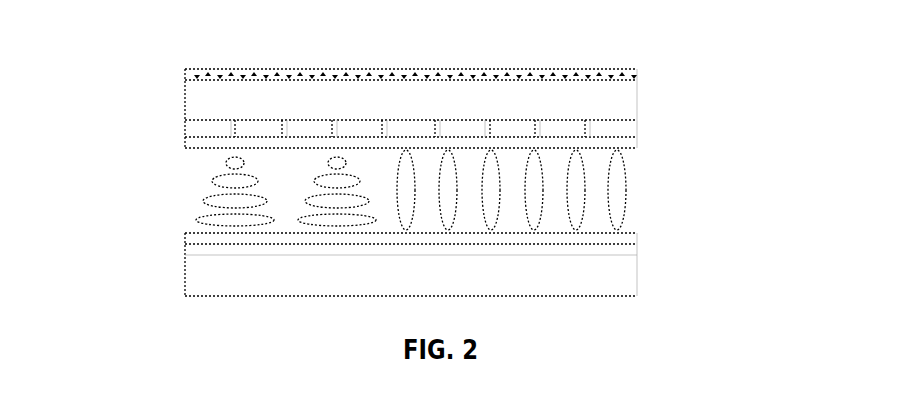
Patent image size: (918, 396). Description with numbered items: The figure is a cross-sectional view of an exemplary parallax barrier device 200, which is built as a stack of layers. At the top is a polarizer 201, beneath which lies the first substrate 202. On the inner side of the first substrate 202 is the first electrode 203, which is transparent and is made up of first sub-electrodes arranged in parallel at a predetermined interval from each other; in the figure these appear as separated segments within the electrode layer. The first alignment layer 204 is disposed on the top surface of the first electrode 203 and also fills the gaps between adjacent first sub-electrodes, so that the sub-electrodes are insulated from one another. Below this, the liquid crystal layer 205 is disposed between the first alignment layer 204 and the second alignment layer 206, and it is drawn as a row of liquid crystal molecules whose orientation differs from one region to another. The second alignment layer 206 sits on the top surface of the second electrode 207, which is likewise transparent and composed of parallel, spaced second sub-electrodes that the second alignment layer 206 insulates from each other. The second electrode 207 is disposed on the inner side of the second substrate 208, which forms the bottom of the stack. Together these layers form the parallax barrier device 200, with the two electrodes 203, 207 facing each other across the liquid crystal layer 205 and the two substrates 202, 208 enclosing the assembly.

The parallax barrier device 200 is at (620, 64).
The polarizer 201 is at (637, 70).
The first substrate 202 is at (185, 91).
The first electrode 203 is at (185, 125).
The first alignment layer 204 is at (637, 142).
The liquid crystal layer 205 is at (626, 187).
The second alignment layer 206 is at (637, 239).
The second electrode 207 is at (185, 250).
The second substrate 208 is at (637, 283).